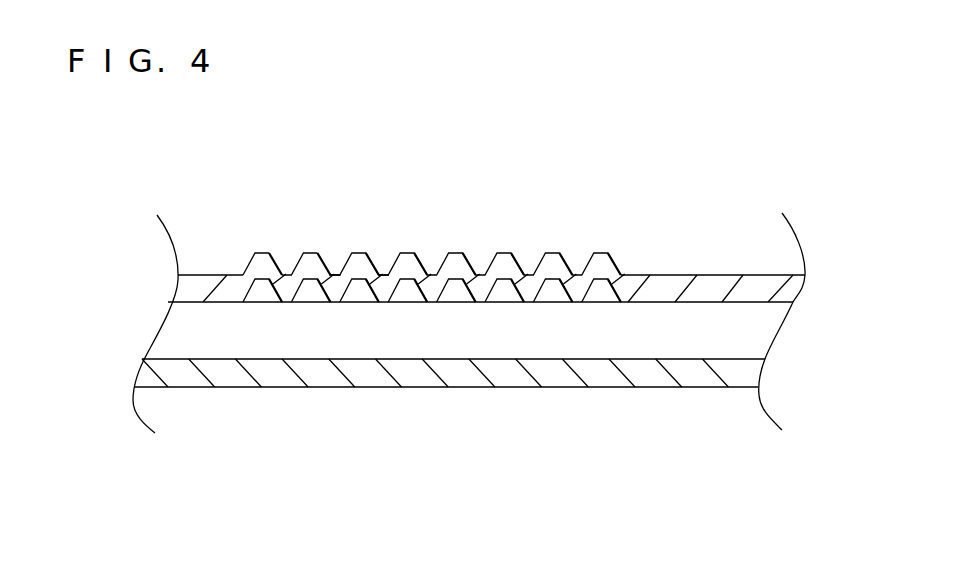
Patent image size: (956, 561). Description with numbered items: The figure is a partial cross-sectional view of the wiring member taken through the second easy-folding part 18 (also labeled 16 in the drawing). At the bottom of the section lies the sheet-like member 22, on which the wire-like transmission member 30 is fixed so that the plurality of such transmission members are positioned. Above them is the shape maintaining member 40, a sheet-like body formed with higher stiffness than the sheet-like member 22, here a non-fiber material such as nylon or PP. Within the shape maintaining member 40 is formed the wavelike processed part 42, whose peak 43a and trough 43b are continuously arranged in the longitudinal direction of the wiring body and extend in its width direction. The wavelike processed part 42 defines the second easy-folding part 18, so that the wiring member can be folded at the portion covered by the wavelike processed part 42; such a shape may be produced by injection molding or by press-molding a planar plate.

The second easy-folding part 18 is at (469, 278).
The laminate 16 is at (700, 277).
The shape maintaining member 40 is at (680, 297).
The wavelike processed part 42 is at (384, 195).
The peak 43a is at (311, 252).
The trough 43b is at (381, 272).
The wire-like transmission member 30 is at (492, 342).
The sheet-like member 22 is at (560, 373).